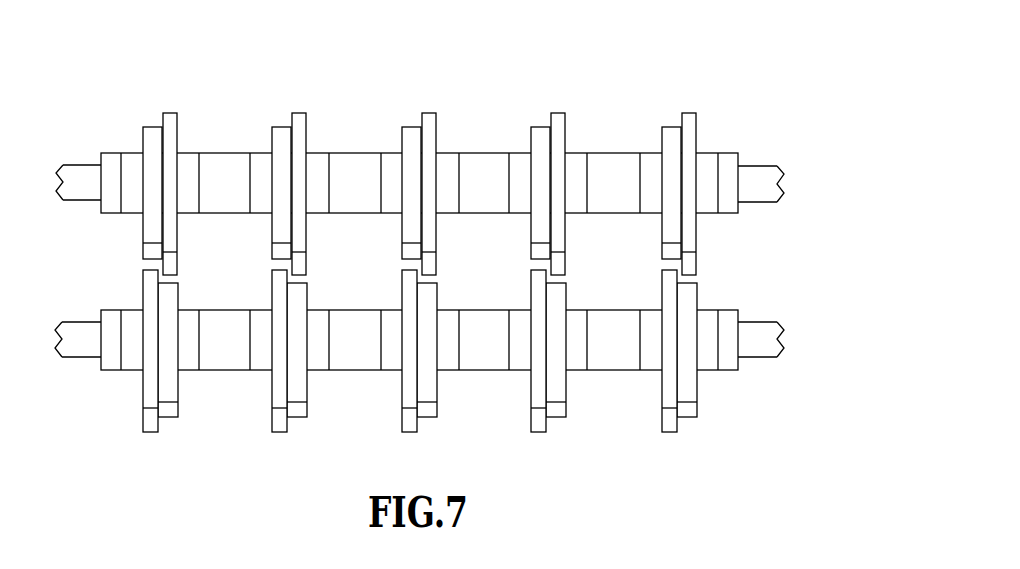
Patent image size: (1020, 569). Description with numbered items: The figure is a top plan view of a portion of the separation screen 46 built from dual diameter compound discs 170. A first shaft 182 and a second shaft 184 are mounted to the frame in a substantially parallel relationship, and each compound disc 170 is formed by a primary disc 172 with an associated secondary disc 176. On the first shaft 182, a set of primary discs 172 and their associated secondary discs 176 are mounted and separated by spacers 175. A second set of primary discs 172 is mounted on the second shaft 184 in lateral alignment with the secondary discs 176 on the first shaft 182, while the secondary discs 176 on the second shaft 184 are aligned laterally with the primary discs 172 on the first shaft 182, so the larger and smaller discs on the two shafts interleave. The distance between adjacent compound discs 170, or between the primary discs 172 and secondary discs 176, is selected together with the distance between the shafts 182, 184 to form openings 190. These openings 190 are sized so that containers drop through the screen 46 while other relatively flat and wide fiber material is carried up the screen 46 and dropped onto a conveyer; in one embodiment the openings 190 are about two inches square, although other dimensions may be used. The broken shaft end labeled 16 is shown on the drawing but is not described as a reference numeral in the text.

The separation screen 46 is at (608, 74).
The shaft 16 is at (82, 358).
The compound disc 170 is at (408, 269).
The primary disc 172 is at (178, 120).
The spacer 175 is at (485, 153).
The secondary disc 176 is at (152, 126).
The first shaft 182 is at (90, 165).
The second shaft 184 is at (82, 321).
The opening 190 is at (614, 240).